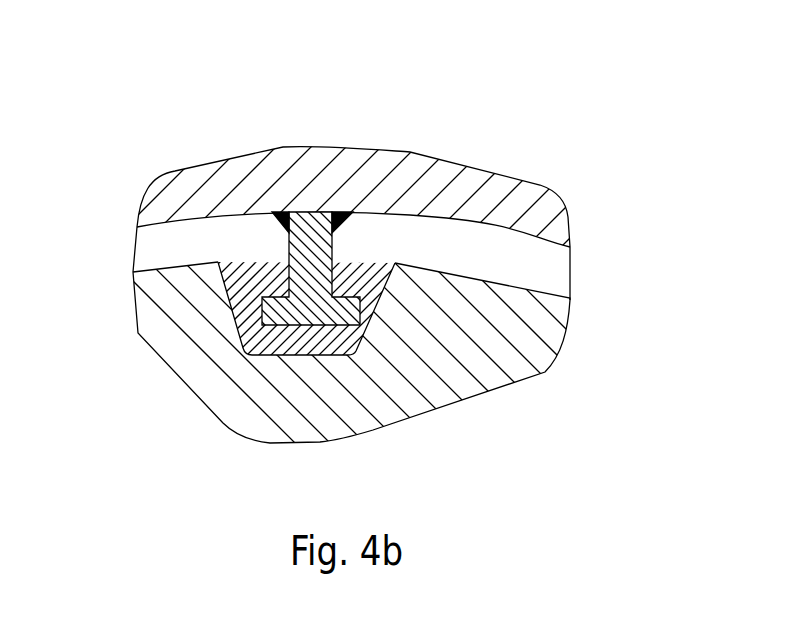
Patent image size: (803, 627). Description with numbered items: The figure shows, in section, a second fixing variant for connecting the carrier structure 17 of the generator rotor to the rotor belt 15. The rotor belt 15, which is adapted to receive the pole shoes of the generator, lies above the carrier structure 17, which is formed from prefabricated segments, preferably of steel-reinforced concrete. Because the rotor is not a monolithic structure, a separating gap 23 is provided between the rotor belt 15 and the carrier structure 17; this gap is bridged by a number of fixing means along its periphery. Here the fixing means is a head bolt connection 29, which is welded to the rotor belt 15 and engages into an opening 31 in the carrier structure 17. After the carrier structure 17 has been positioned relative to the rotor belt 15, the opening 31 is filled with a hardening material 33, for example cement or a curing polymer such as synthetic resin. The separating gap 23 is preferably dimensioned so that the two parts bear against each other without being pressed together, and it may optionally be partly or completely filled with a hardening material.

The rotor belt 15 is at (183, 188).
The carrier structure 17 is at (177, 335).
The separating gap 23 is at (543, 264).
The head bolt connection 29 is at (315, 236).
The opening 31 is at (270, 358).
The hardening material 33 is at (328, 340).